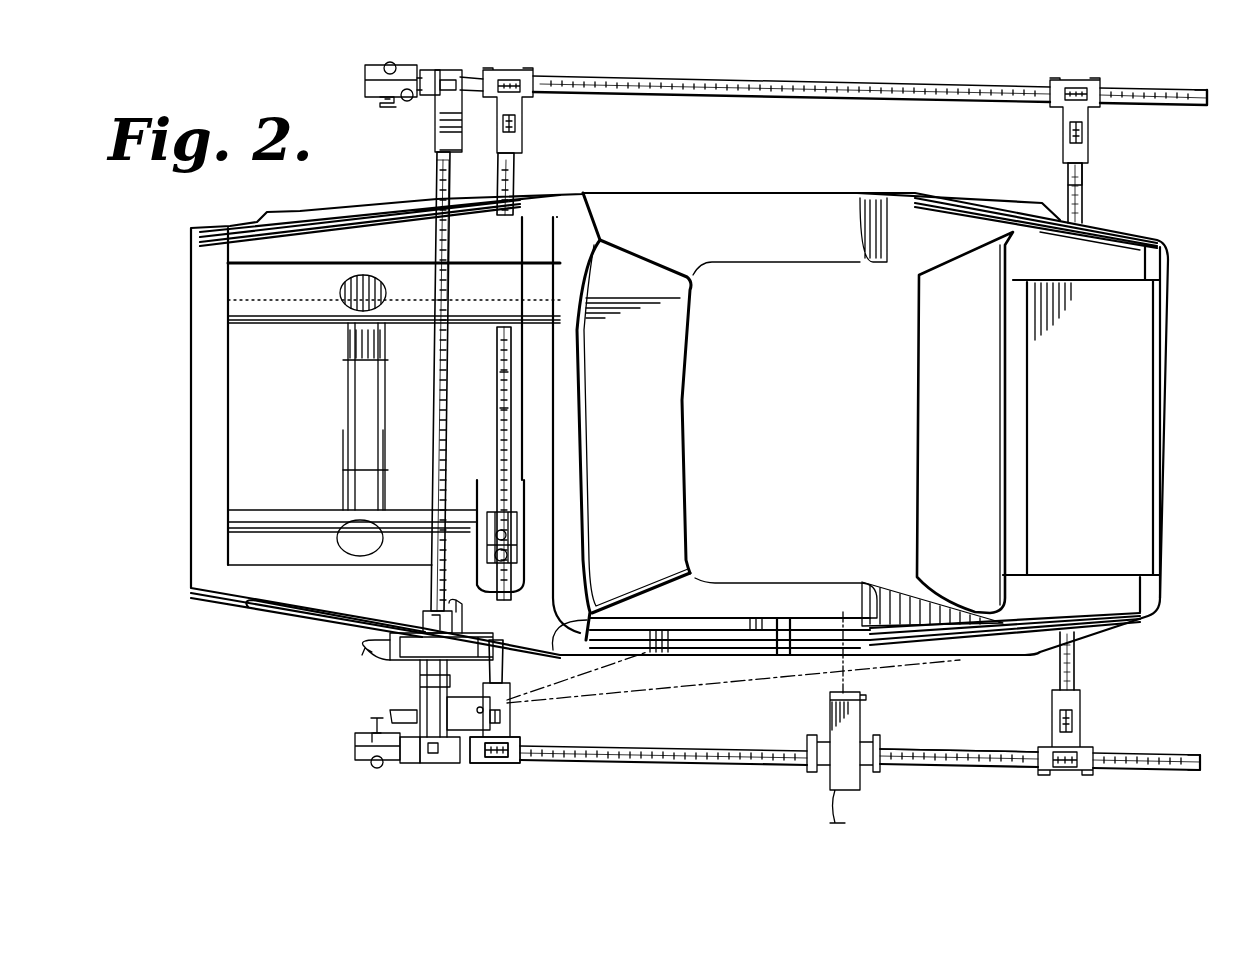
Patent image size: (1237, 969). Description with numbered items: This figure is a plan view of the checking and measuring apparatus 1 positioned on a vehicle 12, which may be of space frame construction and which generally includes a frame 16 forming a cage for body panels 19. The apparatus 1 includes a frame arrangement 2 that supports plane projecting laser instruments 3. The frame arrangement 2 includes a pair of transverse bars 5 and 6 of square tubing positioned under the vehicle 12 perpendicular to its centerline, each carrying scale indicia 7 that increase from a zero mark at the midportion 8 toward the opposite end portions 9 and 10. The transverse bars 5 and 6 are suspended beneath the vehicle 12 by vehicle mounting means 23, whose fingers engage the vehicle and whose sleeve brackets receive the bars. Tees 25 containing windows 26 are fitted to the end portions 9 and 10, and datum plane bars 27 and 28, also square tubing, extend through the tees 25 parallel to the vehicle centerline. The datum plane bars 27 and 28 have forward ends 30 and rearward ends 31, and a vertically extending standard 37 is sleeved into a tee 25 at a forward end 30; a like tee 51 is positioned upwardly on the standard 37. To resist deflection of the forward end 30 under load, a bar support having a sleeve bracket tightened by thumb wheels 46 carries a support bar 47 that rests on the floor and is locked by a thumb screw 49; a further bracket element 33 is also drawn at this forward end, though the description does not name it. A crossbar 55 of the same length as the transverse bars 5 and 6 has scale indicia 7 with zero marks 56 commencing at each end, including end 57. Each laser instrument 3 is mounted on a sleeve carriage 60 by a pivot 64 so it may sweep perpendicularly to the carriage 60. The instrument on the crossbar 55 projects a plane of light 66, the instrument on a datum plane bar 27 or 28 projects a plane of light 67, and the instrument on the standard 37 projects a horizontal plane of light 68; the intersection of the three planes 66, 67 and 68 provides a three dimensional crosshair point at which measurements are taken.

The checking and measuring apparatus 1 is at (613, 808).
The frame arrangement 2 is at (968, 770).
The laser instrument 3 is at (410, 716).
The transverse bar 5 is at (518, 190).
The transverse bar 6 is at (1084, 184).
The scale indicia 7 is at (435, 436).
The midportion 8 is at (494, 389).
The end portion 9 is at (1076, 680).
The end portion 10 is at (1066, 173).
The vehicle 12 is at (912, 489).
The frame 16 is at (283, 318).
The body panel 19 is at (1105, 242).
The vehicle mounting means 23 is at (488, 510).
The tee 25 is at (1090, 115).
The window 26 is at (497, 766).
The datum plane bar 27 is at (698, 767).
The datum plane bar 28 is at (712, 78).
The forward end 30 is at (417, 70).
The rearward end 31 is at (1196, 88).
The bracket 33 is at (356, 757).
The standard 37 is at (460, 76).
The thumb wheel 46 is at (390, 62).
The support bar 47 is at (385, 100).
The thumb screw 49 is at (373, 718).
The tee 51 is at (433, 127).
The crossbar 55 is at (432, 403).
The zero mark 56 is at (436, 171).
The end 57 is at (432, 593).
The sleeve carriage 60 is at (422, 614).
The pivot 64 is at (457, 680).
The plane of light 66 is at (560, 652).
The plane of light 67 is at (848, 680).
The plane of light 68 is at (728, 690).